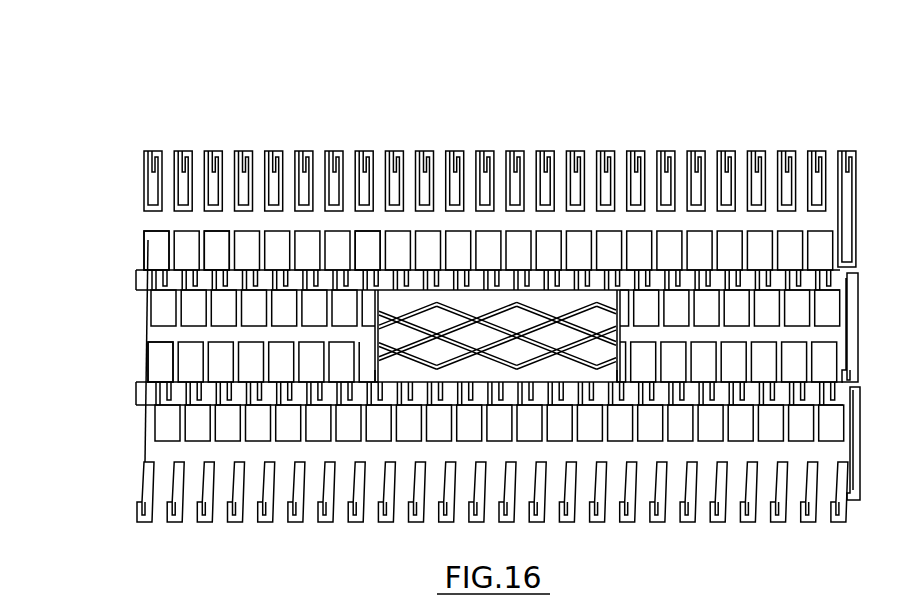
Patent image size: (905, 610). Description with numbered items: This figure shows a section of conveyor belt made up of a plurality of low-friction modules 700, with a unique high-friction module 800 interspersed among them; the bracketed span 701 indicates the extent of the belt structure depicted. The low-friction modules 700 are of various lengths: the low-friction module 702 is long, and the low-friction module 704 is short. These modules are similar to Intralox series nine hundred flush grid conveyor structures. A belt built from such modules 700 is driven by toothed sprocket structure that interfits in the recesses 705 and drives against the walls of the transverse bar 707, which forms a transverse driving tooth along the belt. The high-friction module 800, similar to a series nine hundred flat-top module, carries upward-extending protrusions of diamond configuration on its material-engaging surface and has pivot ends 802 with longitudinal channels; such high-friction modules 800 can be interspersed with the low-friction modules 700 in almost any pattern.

The low-friction module 700 is at (134, 226).
The transducer array 701 is at (143, 120).
The long low-friction module 702 is at (146, 237).
The short low-friction module 704 is at (172, 337).
The recess 705 is at (219, 240).
The transverse bar 707 is at (355, 255).
The high-friction module 800 is at (473, 305).
The pivot end 802 is at (613, 395).